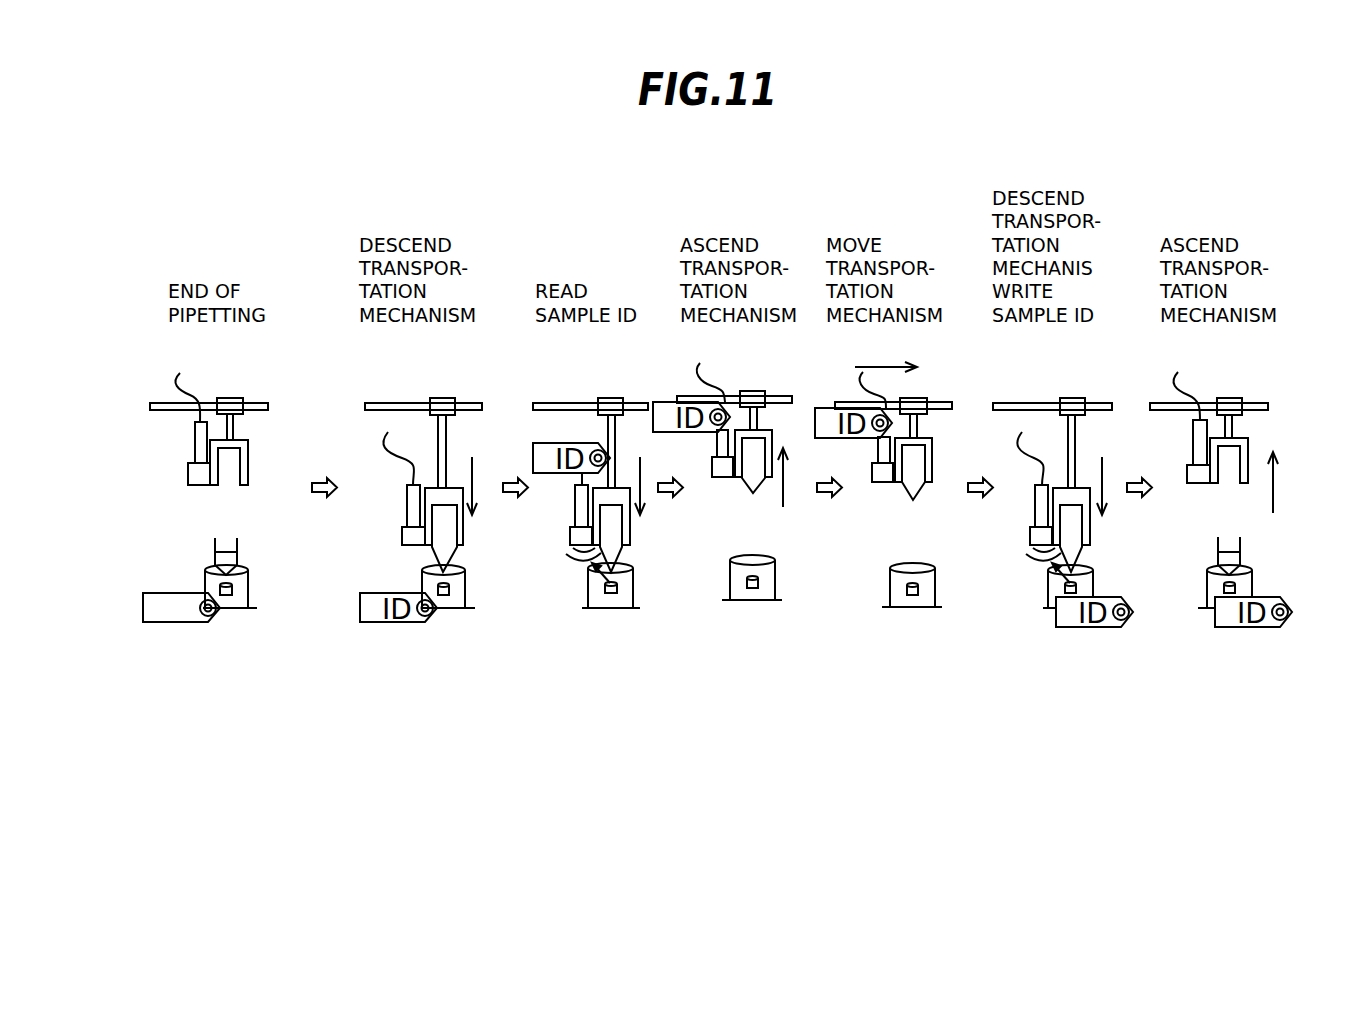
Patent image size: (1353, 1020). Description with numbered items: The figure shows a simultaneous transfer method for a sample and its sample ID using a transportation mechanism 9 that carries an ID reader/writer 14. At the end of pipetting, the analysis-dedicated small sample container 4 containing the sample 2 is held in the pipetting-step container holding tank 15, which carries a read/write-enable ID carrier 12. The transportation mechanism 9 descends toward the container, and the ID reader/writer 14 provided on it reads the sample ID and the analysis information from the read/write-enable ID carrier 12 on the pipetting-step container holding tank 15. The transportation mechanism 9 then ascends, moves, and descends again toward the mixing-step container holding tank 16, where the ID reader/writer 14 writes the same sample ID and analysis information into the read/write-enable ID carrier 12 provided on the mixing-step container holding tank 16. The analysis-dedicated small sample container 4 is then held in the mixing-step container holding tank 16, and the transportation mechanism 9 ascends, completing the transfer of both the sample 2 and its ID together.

The sample 2 is at (218, 557).
The analysis-dedicated small sample container 4 is at (248, 577).
The transportation mechanism 9 is at (232, 405).
The read/write-enable ID carrier 12 is at (204, 590).
The ID reader/writer 14 is at (198, 438).
The pipetting-step container holding tank 15 is at (236, 602).
The mixing-step container holding tank 16 is at (910, 606).